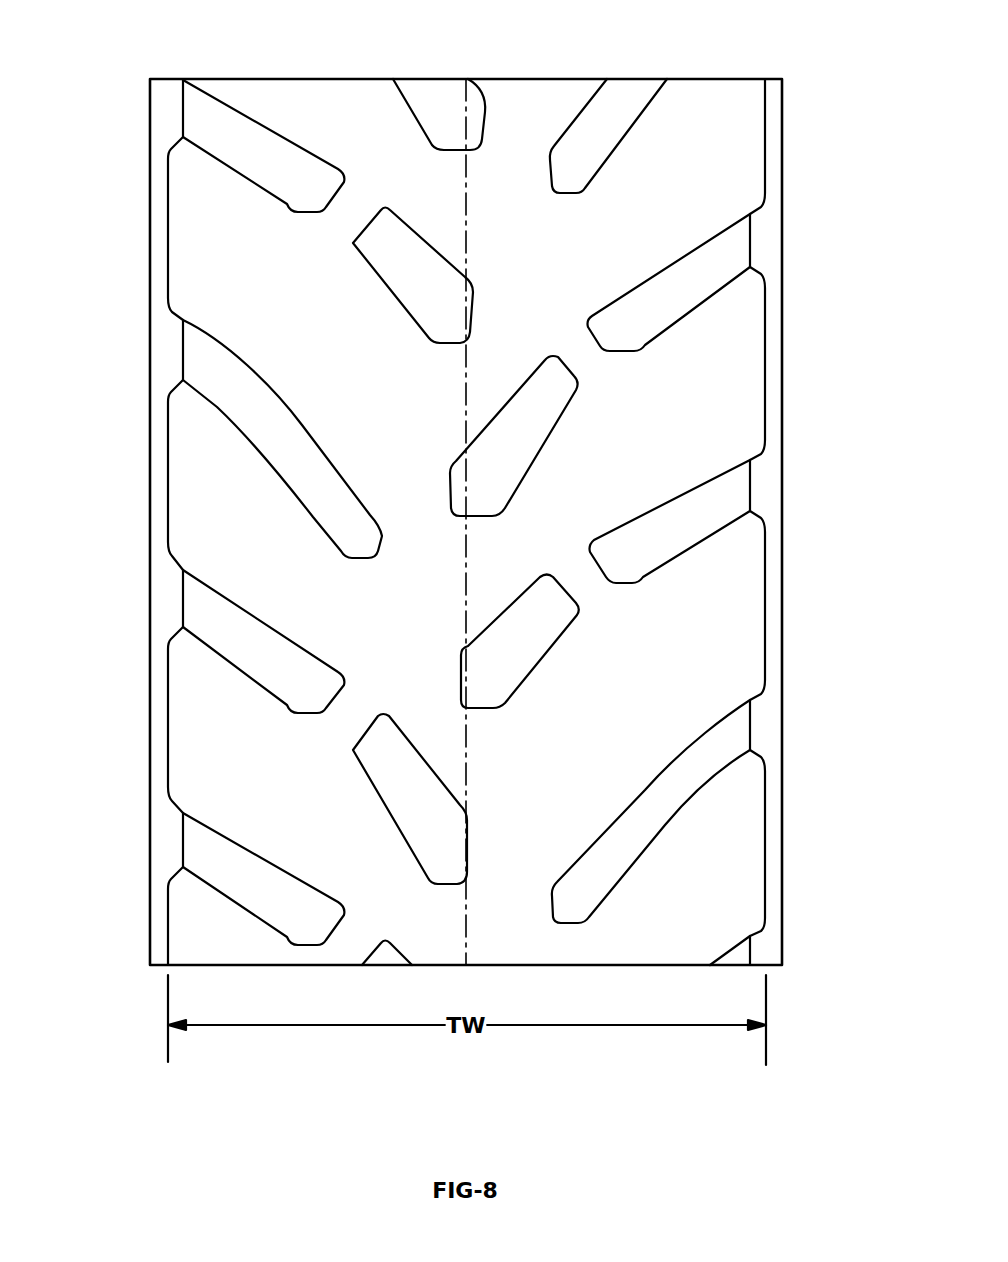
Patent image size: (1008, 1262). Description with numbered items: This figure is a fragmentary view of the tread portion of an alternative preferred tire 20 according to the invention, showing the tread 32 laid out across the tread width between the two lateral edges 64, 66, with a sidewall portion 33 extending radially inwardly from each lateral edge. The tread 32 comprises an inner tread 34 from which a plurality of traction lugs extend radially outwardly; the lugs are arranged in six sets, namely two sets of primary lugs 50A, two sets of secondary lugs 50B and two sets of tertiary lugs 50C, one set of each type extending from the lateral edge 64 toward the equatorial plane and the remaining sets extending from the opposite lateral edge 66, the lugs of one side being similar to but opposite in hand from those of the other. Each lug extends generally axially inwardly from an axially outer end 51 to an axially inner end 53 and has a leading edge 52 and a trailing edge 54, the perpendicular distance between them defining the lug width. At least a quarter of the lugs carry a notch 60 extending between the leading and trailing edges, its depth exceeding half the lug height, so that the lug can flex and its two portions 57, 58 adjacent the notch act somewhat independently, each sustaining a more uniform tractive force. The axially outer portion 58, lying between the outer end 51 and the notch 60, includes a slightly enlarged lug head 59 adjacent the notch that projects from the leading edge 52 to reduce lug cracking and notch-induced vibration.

The tire 20 is at (826, 115).
The tread 32 is at (212, 799).
The sidewall portion 33 is at (785, 600).
The inner tread 34 is at (205, 672).
The primary lugs 50A is at (203, 625).
The secondary lugs 50B is at (207, 115).
The tertiary lugs 50C is at (210, 373).
The axially outer end 51 is at (177, 127).
The leading edge 52 is at (288, 208).
The axially inner end 53 is at (474, 298).
The trailing edge 54 is at (407, 220).
The lug portion 57 is at (547, 410).
The axially outer portion 58 is at (667, 293).
The enlarged lug head 59 is at (307, 203).
The notch 60 is at (353, 210).
The tread lateral edge 64 is at (299, 1036).
The tread lateral edge 66 is at (633, 1039).